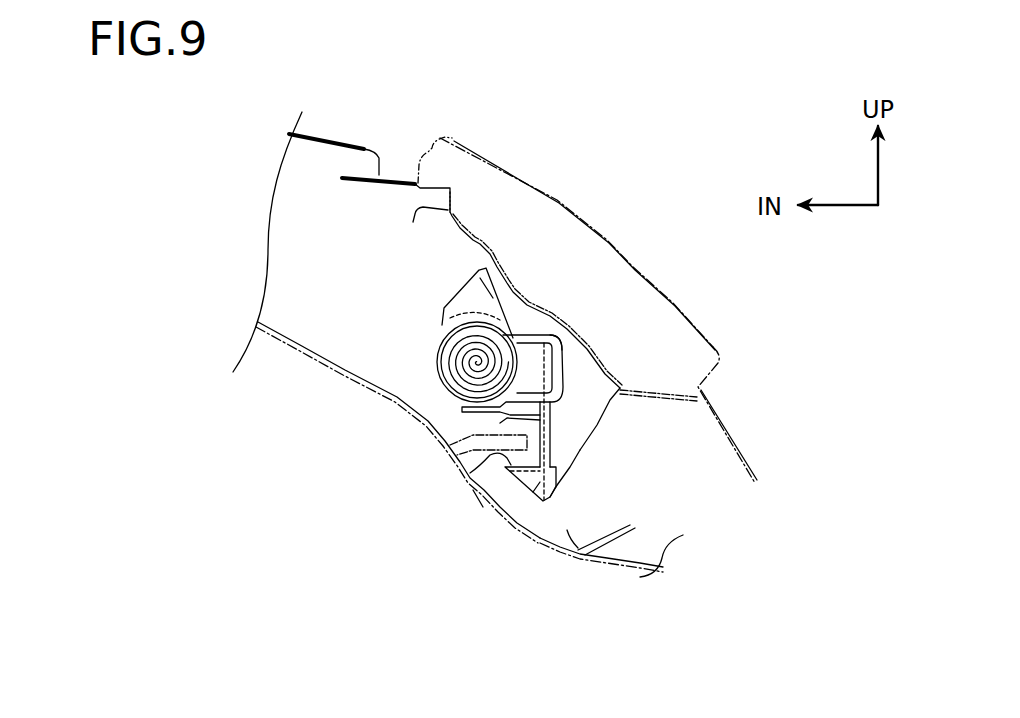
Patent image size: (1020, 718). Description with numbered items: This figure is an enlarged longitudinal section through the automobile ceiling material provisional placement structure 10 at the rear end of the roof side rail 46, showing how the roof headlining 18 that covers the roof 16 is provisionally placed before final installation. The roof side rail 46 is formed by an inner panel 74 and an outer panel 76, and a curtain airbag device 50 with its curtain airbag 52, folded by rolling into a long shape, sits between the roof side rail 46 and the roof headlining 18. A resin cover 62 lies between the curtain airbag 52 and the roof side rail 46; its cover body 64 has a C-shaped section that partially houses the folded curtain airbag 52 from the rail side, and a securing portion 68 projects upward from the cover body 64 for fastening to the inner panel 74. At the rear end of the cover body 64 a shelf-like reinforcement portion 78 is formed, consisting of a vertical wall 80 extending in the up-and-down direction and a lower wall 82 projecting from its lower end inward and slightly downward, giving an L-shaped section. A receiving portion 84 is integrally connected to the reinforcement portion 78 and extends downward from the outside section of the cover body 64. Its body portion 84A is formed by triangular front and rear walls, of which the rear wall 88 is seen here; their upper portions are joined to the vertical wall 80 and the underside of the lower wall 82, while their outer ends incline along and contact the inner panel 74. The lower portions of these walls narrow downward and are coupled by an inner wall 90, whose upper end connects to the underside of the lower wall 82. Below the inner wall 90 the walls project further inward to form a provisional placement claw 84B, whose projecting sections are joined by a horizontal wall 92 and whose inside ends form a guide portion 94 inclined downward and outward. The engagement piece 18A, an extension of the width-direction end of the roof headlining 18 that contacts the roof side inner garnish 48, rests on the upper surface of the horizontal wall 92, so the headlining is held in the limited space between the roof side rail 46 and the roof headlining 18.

The automobile ceiling material provisional placement structure 10 is at (420, 515).
The roof 16 is at (348, 133).
The roof headlining 18 is at (310, 357).
The engagement piece 18A is at (453, 468).
The roof side rail 46 is at (608, 239).
The roof side inner garnish 48 is at (583, 560).
The curtain airbag device 50 is at (433, 387).
The curtain airbag 52 is at (437, 348).
The resin cover 62 is at (455, 285).
The cover body 64 is at (457, 312).
The securing portion 68 is at (502, 288).
The inner panel 74 is at (413, 222).
The outer panel 76 is at (526, 176).
The reinforcement portion 78 is at (571, 377).
The vertical wall 80 is at (561, 352).
The lower wall 82 is at (530, 390).
The receiving portion 84 is at (609, 417).
The body portion 84A is at (568, 432).
The provisional placement claw 84B is at (533, 492).
The rear wall 88 is at (570, 462).
The inner wall 90 is at (500, 423).
The horizontal wall 92 is at (470, 473).
The guide portion 94 is at (478, 482).